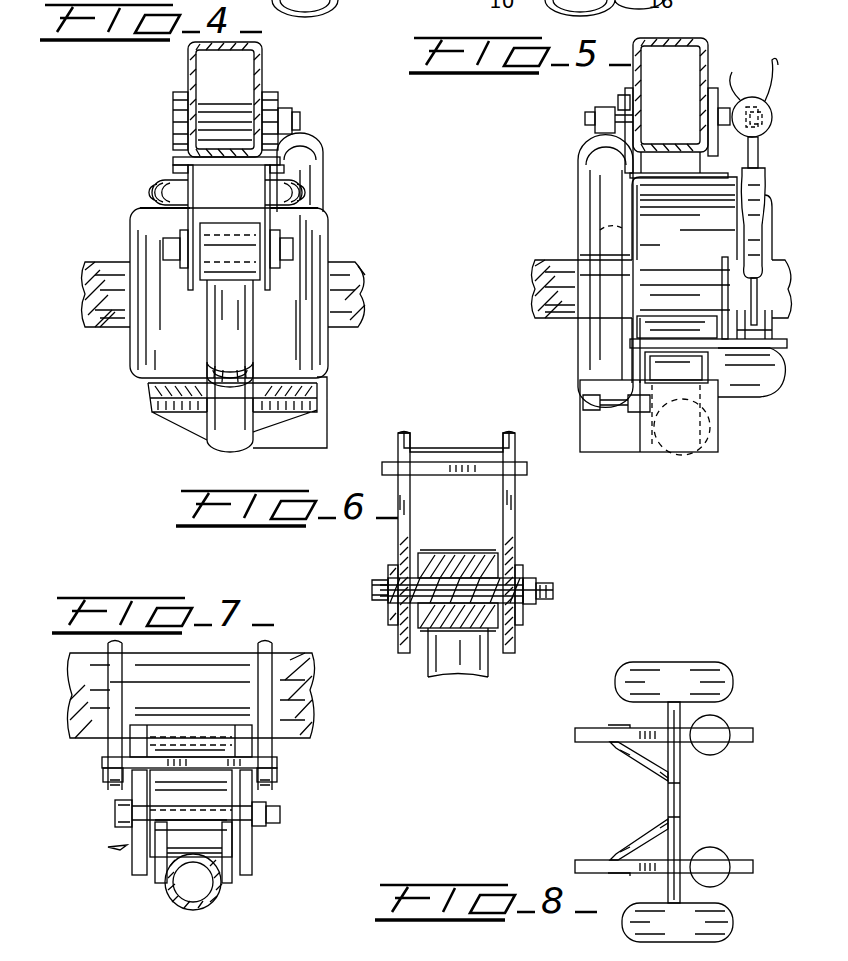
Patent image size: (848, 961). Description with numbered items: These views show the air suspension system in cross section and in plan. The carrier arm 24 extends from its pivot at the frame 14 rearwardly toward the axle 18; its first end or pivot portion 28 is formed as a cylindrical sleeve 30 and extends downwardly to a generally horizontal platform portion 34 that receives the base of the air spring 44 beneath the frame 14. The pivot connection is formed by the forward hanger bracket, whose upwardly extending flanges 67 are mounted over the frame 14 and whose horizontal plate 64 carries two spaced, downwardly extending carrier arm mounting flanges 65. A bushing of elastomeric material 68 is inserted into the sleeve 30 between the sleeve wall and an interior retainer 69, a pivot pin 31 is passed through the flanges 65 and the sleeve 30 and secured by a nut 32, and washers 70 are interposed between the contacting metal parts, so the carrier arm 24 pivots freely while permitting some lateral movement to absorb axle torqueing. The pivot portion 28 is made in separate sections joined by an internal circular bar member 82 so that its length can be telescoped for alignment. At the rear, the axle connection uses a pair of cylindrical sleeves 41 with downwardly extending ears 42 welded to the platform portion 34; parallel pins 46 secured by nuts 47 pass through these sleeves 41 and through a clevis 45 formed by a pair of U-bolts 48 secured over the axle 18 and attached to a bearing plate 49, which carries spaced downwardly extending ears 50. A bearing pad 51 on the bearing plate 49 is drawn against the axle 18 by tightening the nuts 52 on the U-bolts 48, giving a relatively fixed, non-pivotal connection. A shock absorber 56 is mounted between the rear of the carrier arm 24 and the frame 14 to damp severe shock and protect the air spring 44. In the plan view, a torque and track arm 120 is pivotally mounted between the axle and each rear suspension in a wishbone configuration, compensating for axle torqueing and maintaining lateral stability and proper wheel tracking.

In FIG. 4, the frame 14 is at (264, 66).
In FIG. 5, the frame 14 is at (708, 52).
In FIG. 6, the frame 14 is at (497, 435).
In FIG. 8, the frame 14 is at (753, 736).
In FIG. 4, the rear axle 18 is at (362, 283).
In FIG. 5, the rear axle 18 is at (528, 316).
In FIG. 7, the rear axle 18 is at (312, 715).
In FIG. 6, the carrier arm 24 is at (470, 664).
In FIG. 4, the pivot portion 28 is at (207, 325).
In FIG. 4, the cylindrical sleeve 30 is at (215, 230).
In FIG. 6, the cylindrical sleeve 30 is at (378, 593).
In FIG. 4, the pivot pin 31 is at (163, 247).
In FIG. 6, the nut 32 is at (530, 583).
In FIG. 5, the platform portion 34 is at (702, 454).
In FIG. 7, the platform portion 34 is at (214, 900).
In FIG. 7, the cylindrical sleeves 41 is at (210, 792).
In FIG. 5, the ears 42 is at (712, 430).
In FIG. 7, the ears 42 is at (158, 866).
In FIG. 4, the air spring 44 is at (322, 246).
In FIG. 5, the air spring 44 is at (772, 246).
In FIG. 7, the clevis 45 is at (110, 847).
In FIG. 7, the pins 46 is at (115, 812).
In FIG. 7, the nuts 47 is at (266, 808).
In FIG. 5, the U-bolts 48 is at (705, 300).
In FIG. 7, the U-bolts 48 is at (272, 752).
In FIG. 5, the bearing plate 49 is at (786, 344).
In FIG. 7, the bearing plate 49 is at (277, 764).
In FIG. 7, the ears 50 is at (248, 852).
In FIG. 5, the bearing pad 51 is at (642, 328).
In FIG. 7, the bearing pad 51 is at (140, 748).
In FIG. 7, the nuts 52 is at (104, 776).
In FIG. 4, the shock absorber 56 is at (323, 165).
In FIG. 5, the shock absorber 56 is at (582, 218).
In FIG. 4, the horizontal plate 64 is at (175, 161).
In FIG. 6, the horizontal plate 64 is at (527, 470).
In FIG. 4, the carrier arm mounting flanges 65 is at (270, 212).
In FIG. 6, the carrier arm mounting flanges 65 is at (515, 520).
In FIG. 4, the upwardly extending flanges 67 is at (188, 100).
In FIG. 6, the upwardly extending flanges 67 is at (515, 458).
In FIG. 6, the bushing of elastomeric material 68 is at (498, 572).
In FIG. 6, the interior retainer 69 is at (498, 628).
In FIG. 6, the washers 70 is at (392, 572).
In FIG. 4, the internal circular bar member 82 is at (209, 362).
In FIG. 8, the torque and track arm 120 is at (645, 765).